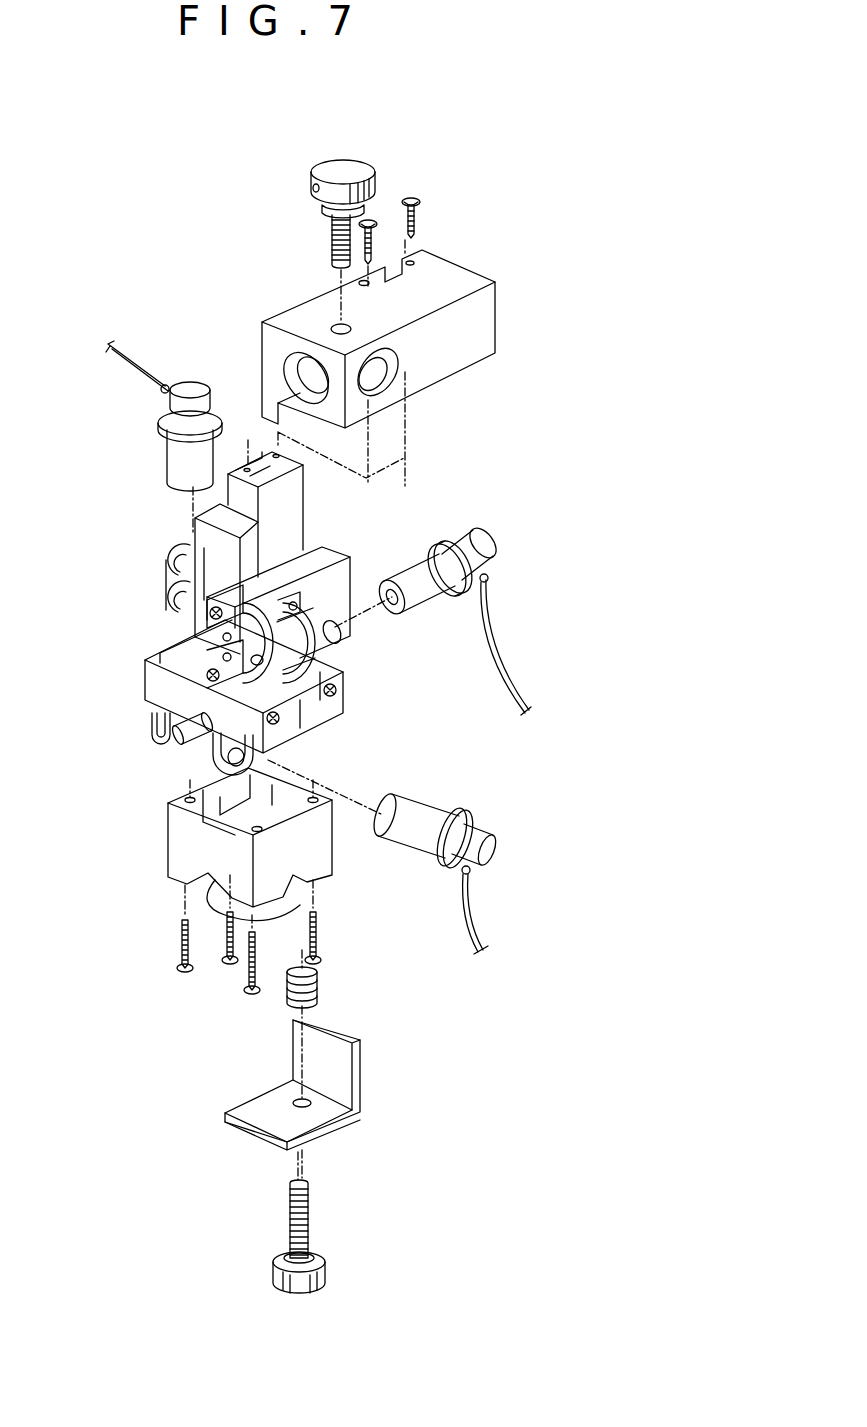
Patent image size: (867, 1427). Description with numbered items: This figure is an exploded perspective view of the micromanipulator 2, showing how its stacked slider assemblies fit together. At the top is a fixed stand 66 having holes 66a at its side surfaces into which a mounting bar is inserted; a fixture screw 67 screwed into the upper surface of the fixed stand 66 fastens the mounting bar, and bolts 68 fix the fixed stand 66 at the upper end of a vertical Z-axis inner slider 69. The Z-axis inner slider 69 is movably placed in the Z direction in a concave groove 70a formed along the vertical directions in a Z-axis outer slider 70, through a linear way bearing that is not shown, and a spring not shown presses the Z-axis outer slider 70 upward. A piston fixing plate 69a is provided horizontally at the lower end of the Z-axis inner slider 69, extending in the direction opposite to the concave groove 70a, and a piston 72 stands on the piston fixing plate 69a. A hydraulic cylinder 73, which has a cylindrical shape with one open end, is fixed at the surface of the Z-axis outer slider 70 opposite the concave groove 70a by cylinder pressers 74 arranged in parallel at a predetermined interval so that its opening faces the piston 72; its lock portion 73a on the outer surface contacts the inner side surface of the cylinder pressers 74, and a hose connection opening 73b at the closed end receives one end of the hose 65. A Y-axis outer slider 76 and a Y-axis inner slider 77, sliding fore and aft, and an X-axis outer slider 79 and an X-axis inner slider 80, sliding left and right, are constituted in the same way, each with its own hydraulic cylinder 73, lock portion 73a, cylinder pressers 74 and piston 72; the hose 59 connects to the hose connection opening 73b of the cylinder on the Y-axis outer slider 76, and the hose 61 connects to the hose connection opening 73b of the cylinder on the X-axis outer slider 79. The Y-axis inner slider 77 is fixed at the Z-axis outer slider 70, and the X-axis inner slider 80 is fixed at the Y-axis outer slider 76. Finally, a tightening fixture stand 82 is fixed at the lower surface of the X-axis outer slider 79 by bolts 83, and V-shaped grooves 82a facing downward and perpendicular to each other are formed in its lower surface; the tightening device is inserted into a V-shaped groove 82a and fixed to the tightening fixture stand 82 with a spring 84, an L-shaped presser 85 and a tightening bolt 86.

The micromanipulator 2 is at (220, 205).
The hose 59 is at (505, 676).
The hose 61 is at (495, 948).
The hose 65 is at (118, 367).
The fixed stand 66 is at (457, 275).
The holes 66a is at (340, 390).
The fixture screw 67 is at (341, 168).
The bolts 68 is at (372, 215).
The Z-axis inner slider 69 is at (290, 512).
The piston fixing plate 69a is at (150, 668).
The Z-axis outer slider 70 is at (205, 538).
The concave groove 70a is at (172, 492).
The piston 72 is at (330, 650).
The hydraulic cylinder 73 is at (193, 380).
The lock portion 73a is at (158, 423).
The hose connection opening 73b is at (170, 388).
The cylinder pressers 74 is at (170, 565).
The Y-axis outer slider 76 is at (320, 546).
The Y-axis inner slider 77 is at (165, 648).
The X-axis outer slider 79 is at (330, 730).
The X-axis inner slider 80 is at (157, 712).
The tightening fixture stand 82 is at (182, 858).
The V-shaped grooves 82a is at (300, 905).
The bolts 83 is at (185, 978).
The spring 84 is at (320, 992).
The L-shaped presser 85 is at (350, 1080).
The tightening bolt 86 is at (318, 1232).